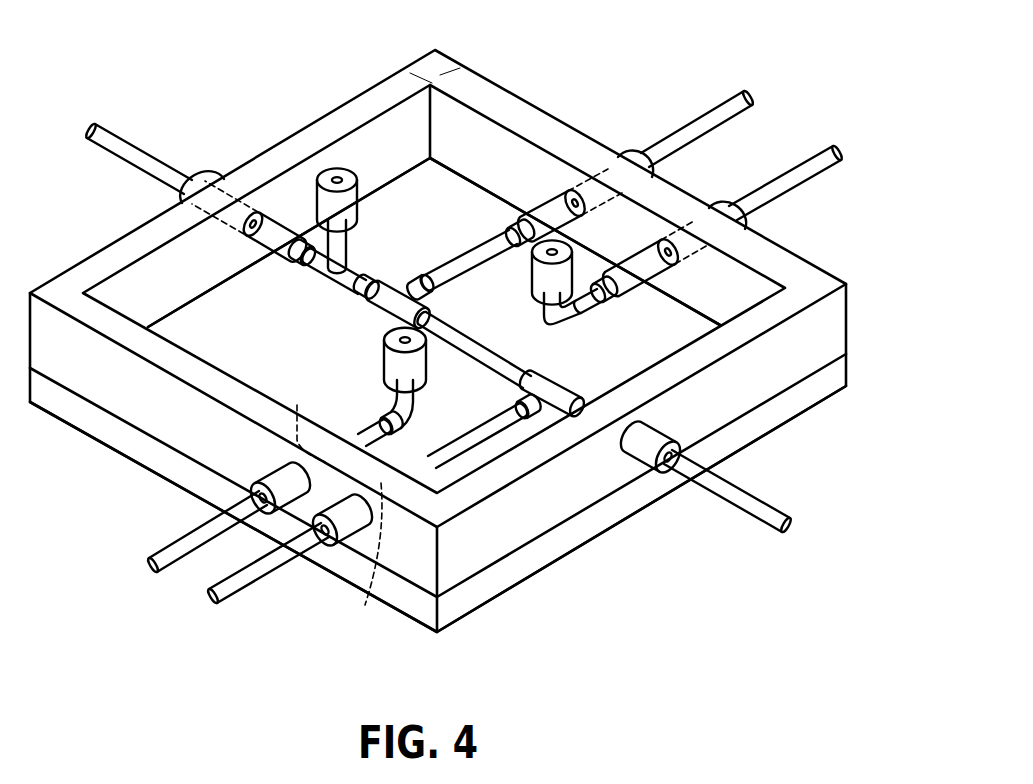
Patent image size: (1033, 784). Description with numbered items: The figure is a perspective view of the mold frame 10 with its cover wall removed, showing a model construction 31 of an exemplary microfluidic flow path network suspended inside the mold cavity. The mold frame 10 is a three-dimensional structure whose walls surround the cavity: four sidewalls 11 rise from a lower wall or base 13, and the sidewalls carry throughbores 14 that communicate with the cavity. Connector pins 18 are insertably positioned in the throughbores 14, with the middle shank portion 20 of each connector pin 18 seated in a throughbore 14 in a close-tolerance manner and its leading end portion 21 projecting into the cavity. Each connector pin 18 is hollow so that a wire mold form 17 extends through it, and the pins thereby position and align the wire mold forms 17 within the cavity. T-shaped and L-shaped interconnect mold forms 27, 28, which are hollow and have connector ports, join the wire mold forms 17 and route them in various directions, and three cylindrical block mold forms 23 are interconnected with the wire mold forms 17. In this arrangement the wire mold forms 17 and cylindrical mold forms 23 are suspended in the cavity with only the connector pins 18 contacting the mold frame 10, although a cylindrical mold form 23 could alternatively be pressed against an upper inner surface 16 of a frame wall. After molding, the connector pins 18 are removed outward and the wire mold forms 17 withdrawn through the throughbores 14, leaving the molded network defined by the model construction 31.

The mold frame 10 is at (492, 56).
The sidewalls 11 is at (772, 383).
The base 13 is at (470, 598).
The throughbores 14 is at (247, 237).
The upper inner surface 16 is at (470, 163).
The wire mold forms 17 is at (133, 142).
The connector pin 18 is at (203, 172).
The middle shank portion 20 is at (450, 410).
The leading end portion 21 is at (293, 262).
The cylindrical block mold form 23 is at (357, 206).
The T-shaped interconnect mold form 27 is at (372, 302).
The L-shaped interconnect mold form 28 is at (565, 320).
The model construction 31 is at (316, 360).